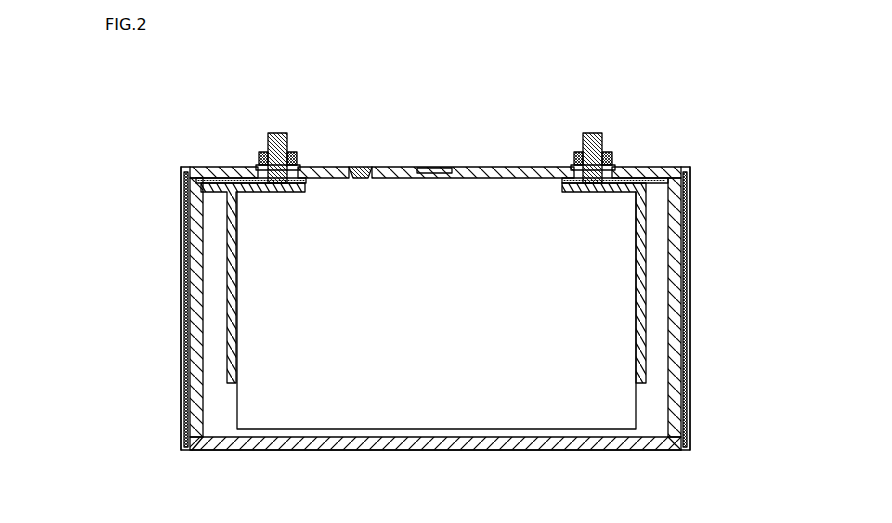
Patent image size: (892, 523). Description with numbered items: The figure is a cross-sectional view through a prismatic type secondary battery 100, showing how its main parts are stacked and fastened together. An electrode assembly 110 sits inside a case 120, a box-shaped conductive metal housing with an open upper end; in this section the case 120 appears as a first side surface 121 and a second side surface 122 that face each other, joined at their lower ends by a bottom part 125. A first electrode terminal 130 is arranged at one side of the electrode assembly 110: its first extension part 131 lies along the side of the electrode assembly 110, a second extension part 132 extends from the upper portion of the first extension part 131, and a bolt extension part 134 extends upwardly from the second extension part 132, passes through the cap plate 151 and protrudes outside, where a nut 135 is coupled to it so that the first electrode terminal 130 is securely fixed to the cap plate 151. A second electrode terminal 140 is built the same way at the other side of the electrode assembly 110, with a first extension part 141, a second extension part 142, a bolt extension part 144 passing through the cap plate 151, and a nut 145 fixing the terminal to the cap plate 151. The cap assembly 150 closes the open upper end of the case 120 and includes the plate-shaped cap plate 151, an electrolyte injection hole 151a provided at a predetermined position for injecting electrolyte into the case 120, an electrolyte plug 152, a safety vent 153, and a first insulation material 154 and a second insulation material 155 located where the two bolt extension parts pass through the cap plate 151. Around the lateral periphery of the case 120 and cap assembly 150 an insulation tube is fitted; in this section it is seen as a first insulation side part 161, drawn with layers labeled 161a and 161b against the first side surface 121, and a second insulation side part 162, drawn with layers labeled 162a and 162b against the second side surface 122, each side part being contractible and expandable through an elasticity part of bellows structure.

The prismatic type secondary battery 100 is at (142, 95).
The electrode assembly 110 is at (487, 432).
The case 120 is at (668, 452).
The first side surface 121 is at (197, 375).
The second side surface 122 is at (676, 372).
The bottom part 125 is at (540, 449).
The first electrode terminal 130 is at (227, 233).
The first extension part 131 is at (226, 345).
The second extension part 132 is at (246, 179).
The bolt extension part 134 is at (276, 133).
The nut 135 is at (292, 152).
The second electrode terminal 140 is at (644, 231).
The first extension part 141 is at (647, 347).
The second extension part 142 is at (630, 178).
The bolt extension part 144 is at (588, 133).
The nut 145 is at (581, 152).
The cap assembly 150 is at (435, 146).
The cap plate 151 is at (528, 167).
The electrolyte injection hole 151a is at (351, 166).
The electrolyte plug 152 is at (366, 167).
The safety vent 153 is at (437, 168).
The first insulation material 154 is at (260, 152).
The second insulation material 155 is at (607, 152).
The first insulation side part 161 is at (155, 308).
The inner layer of first insulating film 161a is at (186, 250).
The outer layer of first insulating film 161b is at (185, 217).
The second insulation side part 162 is at (717, 308).
The inner layer of second insulating film 162a is at (688, 250).
The outer layer of second insulating film 162b is at (688, 218).